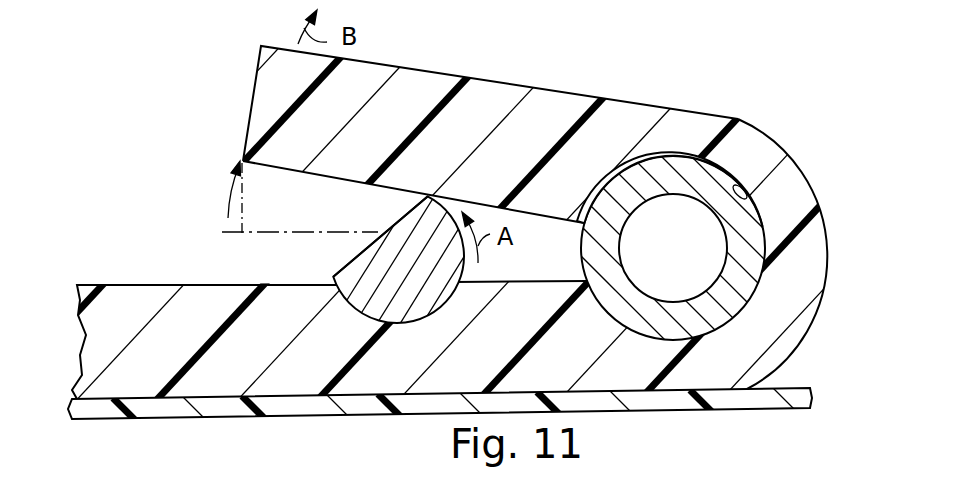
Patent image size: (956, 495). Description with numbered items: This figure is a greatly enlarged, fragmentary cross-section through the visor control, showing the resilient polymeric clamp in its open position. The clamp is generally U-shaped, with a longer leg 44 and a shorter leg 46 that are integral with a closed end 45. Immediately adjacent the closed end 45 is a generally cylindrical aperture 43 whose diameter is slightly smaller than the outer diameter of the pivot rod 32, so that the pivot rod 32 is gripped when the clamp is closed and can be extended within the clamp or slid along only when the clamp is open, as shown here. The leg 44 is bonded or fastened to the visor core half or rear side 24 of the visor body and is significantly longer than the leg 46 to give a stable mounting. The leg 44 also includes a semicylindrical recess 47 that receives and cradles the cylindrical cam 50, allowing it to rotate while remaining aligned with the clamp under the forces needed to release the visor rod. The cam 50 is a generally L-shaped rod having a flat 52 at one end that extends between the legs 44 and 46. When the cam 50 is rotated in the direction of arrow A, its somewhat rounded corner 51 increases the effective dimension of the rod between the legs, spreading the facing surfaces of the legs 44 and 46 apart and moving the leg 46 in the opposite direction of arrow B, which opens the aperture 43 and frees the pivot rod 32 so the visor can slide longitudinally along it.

The visor core half or rear side 24 is at (708, 416).
The pivot rod 32 is at (728, 184).
The cylindrical aperture 43 is at (747, 207).
The leg 44 is at (222, 386).
The closed end 45 is at (815, 318).
The leg 46 is at (507, 92).
The semicylindrical recess 47 is at (437, 302).
The cam 50 is at (465, 272).
The corner 51 is at (428, 196).
The flat 52 is at (397, 222).